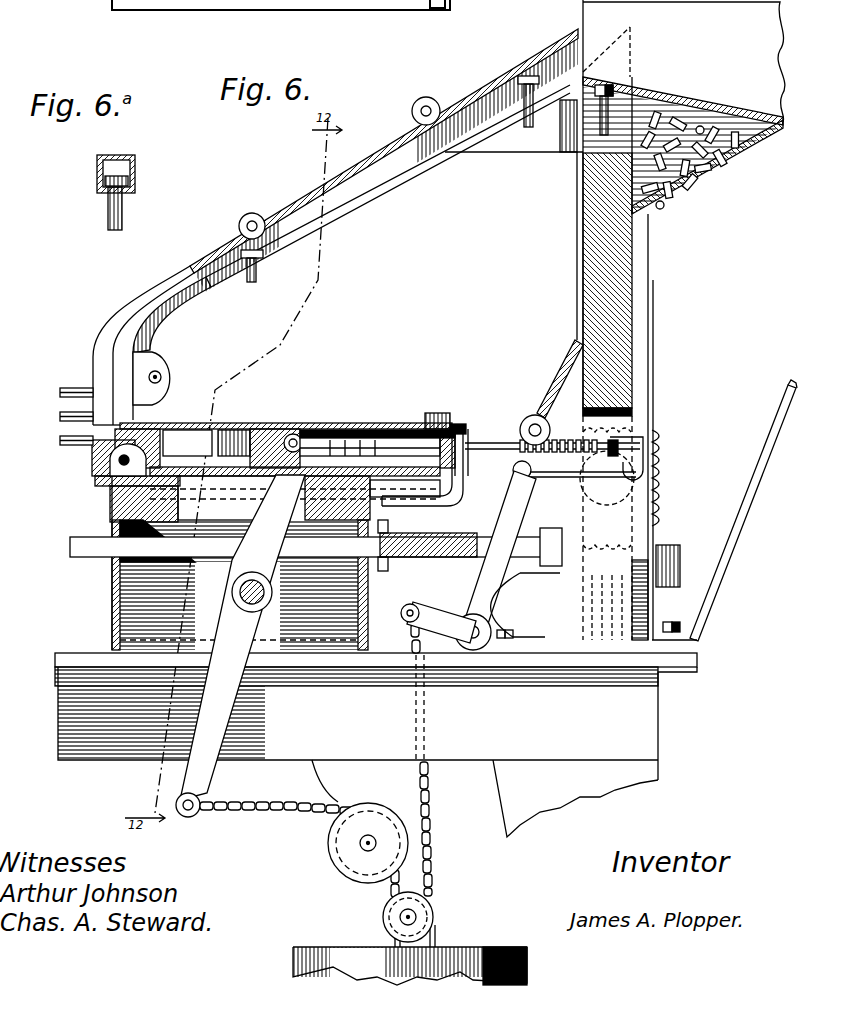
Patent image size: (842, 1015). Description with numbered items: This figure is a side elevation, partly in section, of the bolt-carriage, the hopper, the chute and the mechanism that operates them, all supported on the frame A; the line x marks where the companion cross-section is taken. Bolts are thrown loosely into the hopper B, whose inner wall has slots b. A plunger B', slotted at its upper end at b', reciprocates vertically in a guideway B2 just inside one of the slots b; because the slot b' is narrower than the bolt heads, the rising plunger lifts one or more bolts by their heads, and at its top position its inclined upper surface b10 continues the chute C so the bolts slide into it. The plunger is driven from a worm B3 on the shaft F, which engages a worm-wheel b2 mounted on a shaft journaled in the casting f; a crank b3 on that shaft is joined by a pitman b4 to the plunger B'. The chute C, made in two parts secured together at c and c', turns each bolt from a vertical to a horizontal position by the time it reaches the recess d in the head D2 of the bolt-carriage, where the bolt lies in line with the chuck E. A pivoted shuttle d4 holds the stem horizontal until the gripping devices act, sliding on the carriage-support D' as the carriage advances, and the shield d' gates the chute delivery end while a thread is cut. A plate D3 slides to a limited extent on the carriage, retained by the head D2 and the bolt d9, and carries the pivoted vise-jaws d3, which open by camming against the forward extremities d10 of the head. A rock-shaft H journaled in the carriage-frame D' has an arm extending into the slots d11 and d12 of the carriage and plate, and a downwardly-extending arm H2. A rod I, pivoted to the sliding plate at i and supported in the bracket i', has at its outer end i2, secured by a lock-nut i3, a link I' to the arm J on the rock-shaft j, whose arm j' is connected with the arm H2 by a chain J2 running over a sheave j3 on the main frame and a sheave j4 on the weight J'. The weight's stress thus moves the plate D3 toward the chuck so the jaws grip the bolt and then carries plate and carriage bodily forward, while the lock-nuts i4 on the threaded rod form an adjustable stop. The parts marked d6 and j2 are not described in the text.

In FIG. 6A, the chute C is at (137, 171).
In FIG. 6, the chute C is at (400, 165).
In FIG. 6, the chute joint c is at (253, 211).
In FIG. 6, the chute joint c' is at (412, 112).
In FIG. 6, the section line x is at (214, 257).
In FIG. 6, the forward extremities of head d10 is at (259, 9).
In FIG. 6, the hopper B is at (684, 208).
In FIG. 6, the slot b is at (683, 76).
In FIG. 6, the plunger slot b' is at (683, 145).
In FIG. 6, the upper inclined surface b10 is at (630, 78).
In FIG. 6, the plunger B' is at (635, 284).
In FIG. 6, the guideway B2 is at (637, 337).
In FIG. 6, the worm B3 is at (607, 528).
In FIG. 6, the worm-wheel b2 is at (660, 477).
In FIG. 6, the crank b3 is at (522, 432).
In FIG. 6, the pitman b4 is at (550, 385).
In FIG. 6, the rear end of rod i2 is at (643, 443).
In FIG. 6, the lock-nut i3 is at (620, 438).
In FIG. 6, the lock-nuts i4 is at (518, 455).
In FIG. 6, the rod I is at (546, 418).
In FIG. 6, the link I' is at (529, 484).
In FIG. 6, the pivot i is at (295, 425).
In FIG. 6, the bracket i' is at (424, 453).
In FIG. 6, the shield d' is at (286, 410).
In FIG. 6, the vise-jaws d3 is at (185, 435).
In FIG. 6, the sliding plate D3 is at (275, 430).
In FIG. 6, the slot d11 is at (323, 443).
In FIG. 6, the bolt d9 is at (403, 427).
In FIG. 6, the slot d12 is at (297, 428).
In FIG. 6, the plate d6 is at (110, 487).
In FIG. 6, the head D2 is at (97, 470).
In FIG. 6, the shuttle d4 is at (97, 457).
In FIG. 6, the recess d is at (67, 416).
In FIG. 6, the chuck E is at (295, 498).
In FIG. 6, the carriage-support D' is at (243, 563).
In FIG. 6, the shaft F is at (432, 550).
In FIG. 6, the frame A is at (376, 745).
In FIG. 6, the rock-shaft H is at (262, 650).
In FIG. 6, the downwardly-extending arm H2 is at (190, 768).
In FIG. 6, the chain pivot j2 is at (187, 814).
In FIG. 6, the chain J2 is at (230, 812).
In FIG. 6, the sheave j3 is at (342, 843).
In FIG. 6, the sheave j4 is at (428, 907).
In FIG. 6, the weight J' is at (410, 951).
In FIG. 6, the arm J is at (499, 553).
In FIG. 6, the rock-shaft j is at (471, 663).
In FIG. 6, the arm j' is at (438, 609).
In FIG. 6, the casting f is at (525, 605).